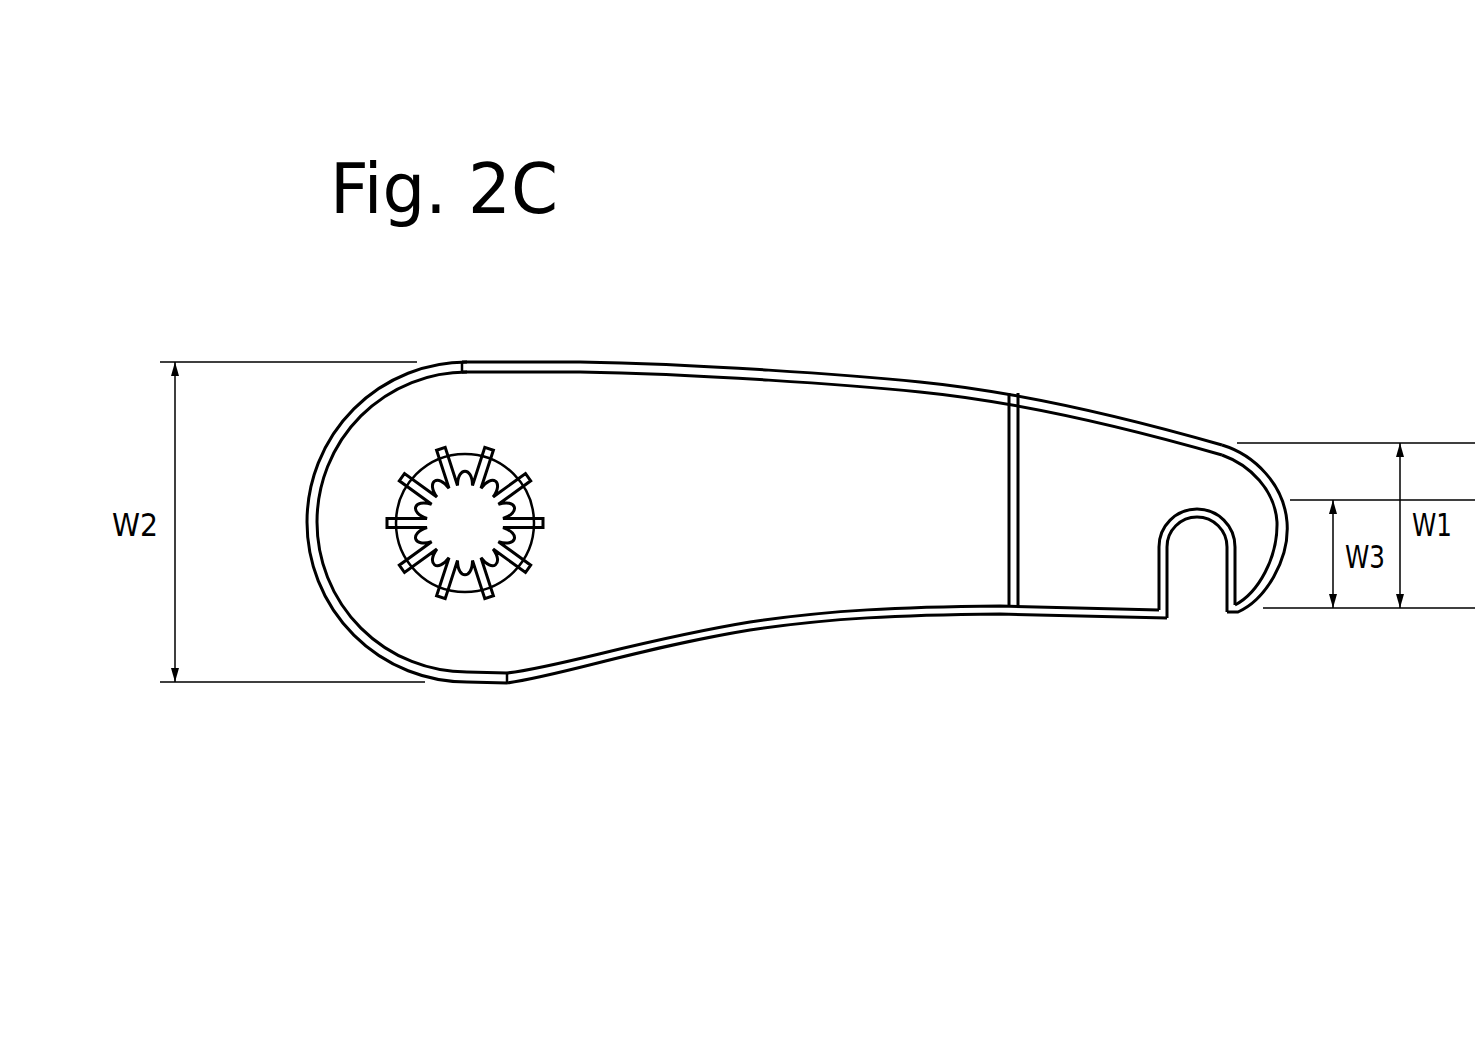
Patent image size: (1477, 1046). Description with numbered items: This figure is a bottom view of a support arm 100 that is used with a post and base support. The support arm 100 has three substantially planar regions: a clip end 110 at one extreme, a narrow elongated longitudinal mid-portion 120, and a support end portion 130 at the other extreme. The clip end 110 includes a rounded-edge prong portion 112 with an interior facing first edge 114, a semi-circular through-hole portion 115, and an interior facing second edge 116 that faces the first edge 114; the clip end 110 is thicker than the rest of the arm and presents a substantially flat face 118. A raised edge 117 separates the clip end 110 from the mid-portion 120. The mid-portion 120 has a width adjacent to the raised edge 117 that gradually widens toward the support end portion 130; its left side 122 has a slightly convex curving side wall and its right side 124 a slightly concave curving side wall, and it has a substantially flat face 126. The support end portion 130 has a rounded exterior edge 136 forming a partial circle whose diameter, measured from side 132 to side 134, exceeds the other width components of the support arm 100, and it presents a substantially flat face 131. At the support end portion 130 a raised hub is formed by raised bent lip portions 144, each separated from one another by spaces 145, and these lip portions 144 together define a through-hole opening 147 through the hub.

The support arm 100 is at (700, 287).
The clip end 110 is at (1193, 345).
The prong portion 112 is at (1253, 542).
The interior facing first edge 114 is at (1222, 593).
The semi-circular through-hole portion 115 is at (1210, 522).
The interior facing second edge 116 is at (1173, 588).
The raised edge 117 is at (1010, 503).
The flat opposing face 118 is at (1080, 445).
The longitudinal mid-portion 120 is at (873, 345).
The left side 122 is at (727, 369).
The right side 124 is at (813, 623).
The flat opposing face 126 is at (835, 500).
The support end portion 130 is at (452, 352).
The flat opposing face 131 is at (397, 627).
The side 132 is at (465, 368).
The side 134 is at (462, 687).
The rounded exterior edge 136 is at (307, 535).
The raised bent lip portions 144 is at (498, 473).
The spaces 145 is at (545, 522).
The through-hole opening 147 is at (472, 528).